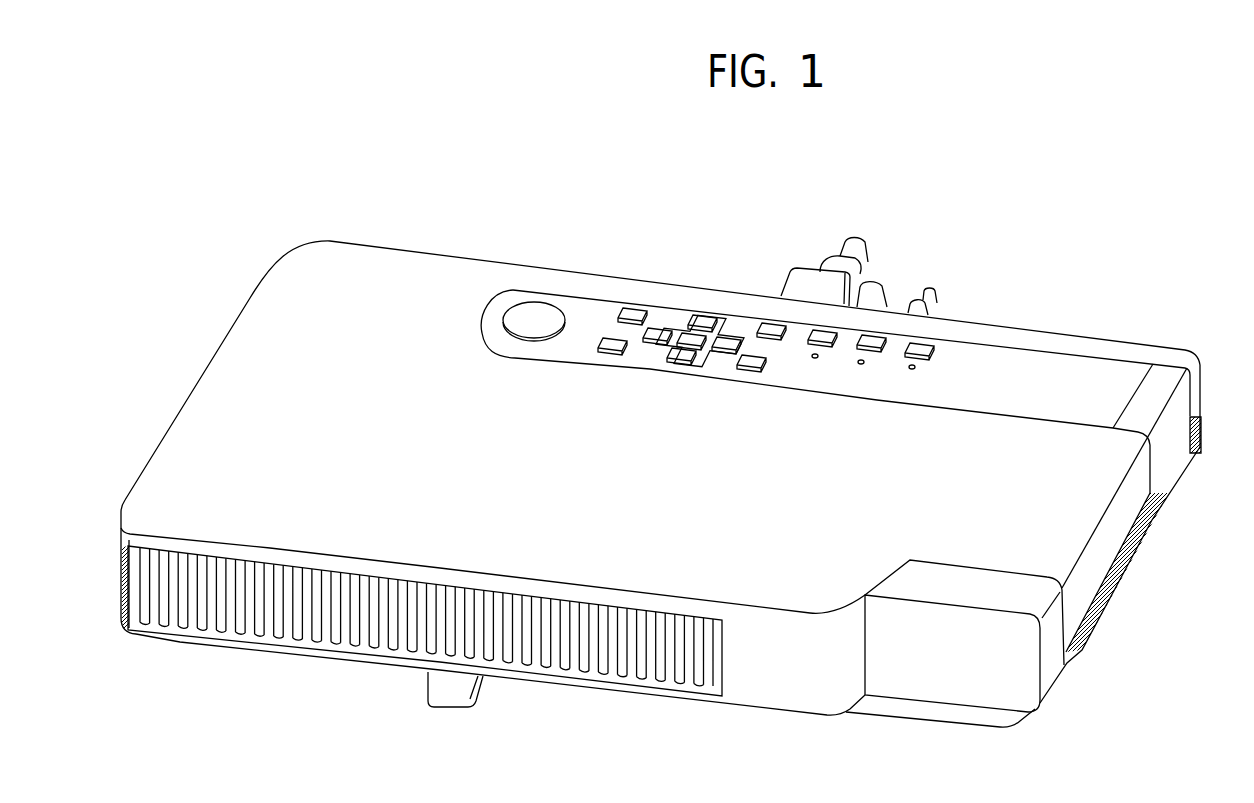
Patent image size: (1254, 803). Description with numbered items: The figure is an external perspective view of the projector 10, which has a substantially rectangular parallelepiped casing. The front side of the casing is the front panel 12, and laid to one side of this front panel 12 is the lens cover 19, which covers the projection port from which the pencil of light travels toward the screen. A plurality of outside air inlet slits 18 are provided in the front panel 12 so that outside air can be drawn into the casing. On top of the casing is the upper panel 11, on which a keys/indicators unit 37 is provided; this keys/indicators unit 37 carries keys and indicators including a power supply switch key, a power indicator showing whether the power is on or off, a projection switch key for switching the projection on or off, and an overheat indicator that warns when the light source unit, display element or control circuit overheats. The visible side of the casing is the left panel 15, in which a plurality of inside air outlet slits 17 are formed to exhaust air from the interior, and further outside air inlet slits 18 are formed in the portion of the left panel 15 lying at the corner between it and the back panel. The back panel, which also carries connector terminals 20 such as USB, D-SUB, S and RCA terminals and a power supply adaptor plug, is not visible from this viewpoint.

The projector 10 is at (626, 198).
The upper panel 11 is at (445, 270).
The front panel 12 is at (763, 676).
The left panel 15 is at (1110, 530).
The inside air outlet slits 17 is at (1100, 610).
The outside air inlet slits 18 is at (660, 672).
The lens cover 19 is at (990, 684).
The connector / interface terminals 20 is at (896, 236).
The keys/indicators unit 37 is at (707, 274).